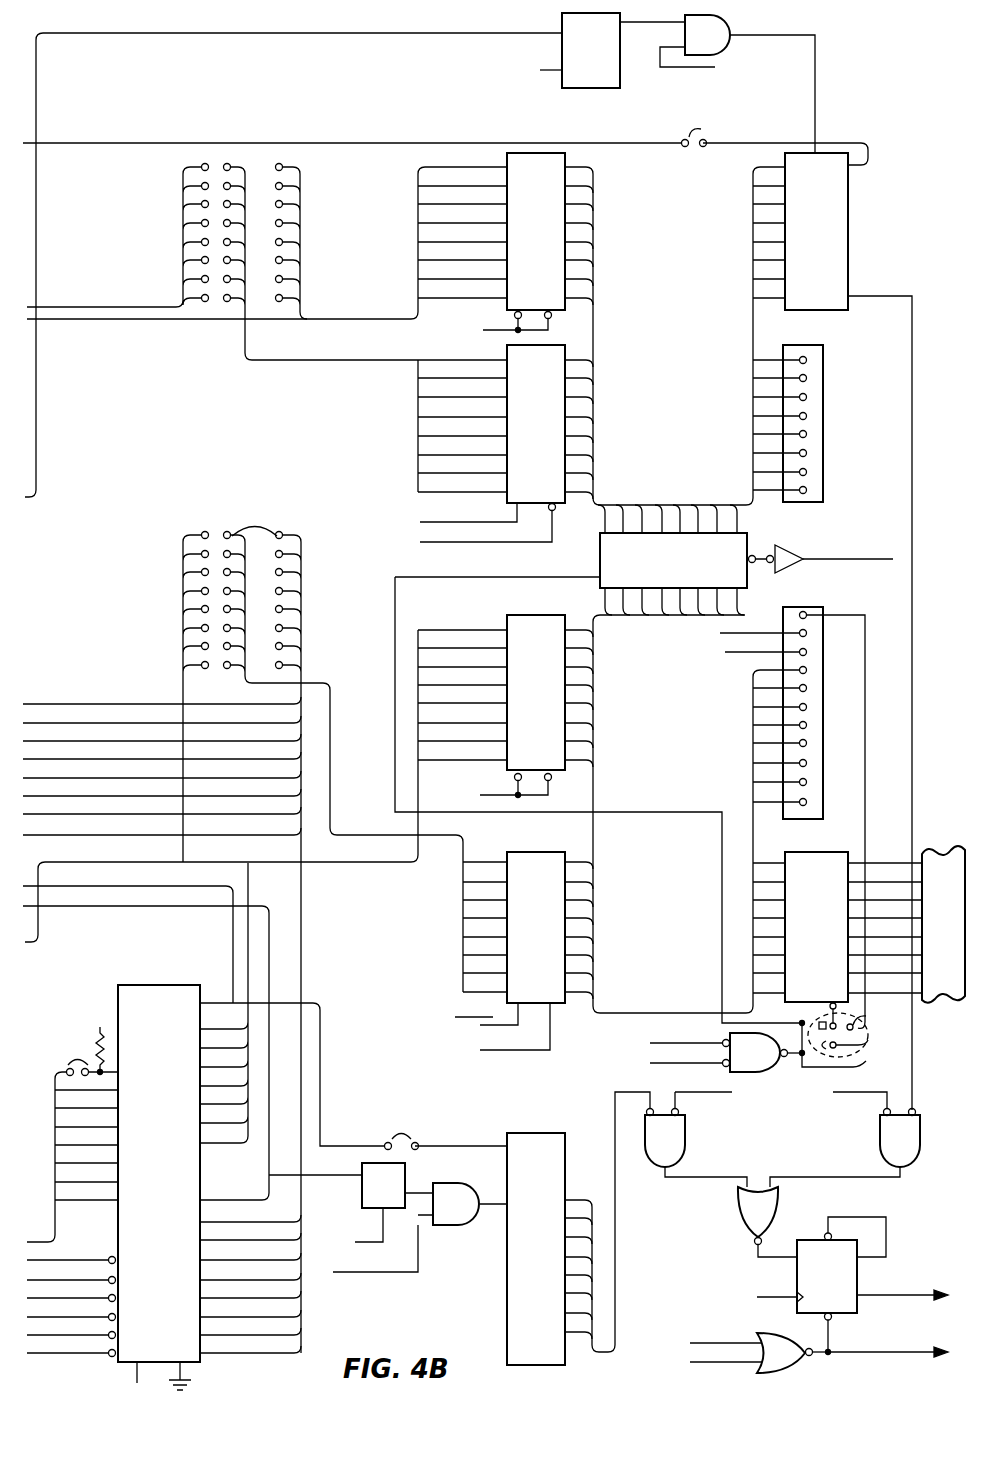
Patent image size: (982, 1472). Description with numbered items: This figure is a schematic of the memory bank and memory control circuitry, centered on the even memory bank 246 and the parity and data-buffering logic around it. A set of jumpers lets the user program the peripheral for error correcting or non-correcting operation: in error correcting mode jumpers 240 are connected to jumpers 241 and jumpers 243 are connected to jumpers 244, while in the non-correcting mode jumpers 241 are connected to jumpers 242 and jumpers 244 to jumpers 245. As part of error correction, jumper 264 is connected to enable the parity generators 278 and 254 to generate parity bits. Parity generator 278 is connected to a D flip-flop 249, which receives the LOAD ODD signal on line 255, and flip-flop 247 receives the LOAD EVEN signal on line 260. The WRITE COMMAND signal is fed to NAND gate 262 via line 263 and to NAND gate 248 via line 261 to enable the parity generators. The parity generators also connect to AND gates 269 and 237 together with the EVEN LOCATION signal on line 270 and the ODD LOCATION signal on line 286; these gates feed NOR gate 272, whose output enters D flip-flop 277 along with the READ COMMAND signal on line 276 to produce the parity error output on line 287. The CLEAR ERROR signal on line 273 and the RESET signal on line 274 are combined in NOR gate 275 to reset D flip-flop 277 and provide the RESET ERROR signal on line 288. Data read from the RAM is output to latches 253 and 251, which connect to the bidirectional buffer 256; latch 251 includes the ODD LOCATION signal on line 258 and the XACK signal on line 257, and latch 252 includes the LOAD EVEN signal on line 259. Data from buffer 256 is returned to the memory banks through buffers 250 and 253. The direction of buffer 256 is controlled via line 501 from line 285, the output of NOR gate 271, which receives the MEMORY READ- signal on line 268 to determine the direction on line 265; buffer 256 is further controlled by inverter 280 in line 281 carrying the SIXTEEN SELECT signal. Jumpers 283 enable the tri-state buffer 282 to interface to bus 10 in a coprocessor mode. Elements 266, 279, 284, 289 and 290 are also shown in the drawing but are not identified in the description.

The bus 10 is at (949, 845).
The AND gate 237 is at (845, 1148).
The jumpers 240 is at (207, 163).
The jumpers 241 is at (231, 164).
The jumpers 242 is at (283, 166).
The jumpers 243 is at (206, 532).
The jumpers 244 is at (229, 532).
The jumpers 245 is at (282, 532).
The even memory bank 246 is at (162, 1126).
The flip-flop 247 is at (351, 1185).
The NAND gate 248 is at (462, 1204).
The D flip-flop 249 is at (322, 255).
The buffer 250 is at (406, 329).
The latch 251 is at (505, 424).
The latch 252 is at (309, 778).
The latch 253 is at (500, 955).
The parity generator 254 is at (553, 1249).
The line 255 is at (542, 71).
The bidirectional buffer 256 is at (571, 563).
The line 257 is at (472, 520).
The line 258 is at (493, 545).
The line 259 is at (487, 796).
The line 260 is at (370, 1243).
The line 261 is at (373, 1272).
The NAND gate 262 is at (717, 84).
The line 263 is at (718, 66).
The jumper 264 is at (689, 136).
The line 265 is at (732, 635).
The signal line 266 is at (732, 654).
The line 268 is at (666, 1063).
The AND gate 269 is at (673, 1222).
The line 270 is at (721, 1091).
The NOR gate 271 is at (763, 1052).
The NOR gate 272 is at (767, 1222).
The line 273 is at (714, 1344).
The line 274 is at (714, 1362).
The NOR gate 275 is at (792, 1353).
The line 276 is at (778, 1289).
The D flip-flop 277 is at (841, 1284).
The parity generator 278 is at (807, 626).
The terminal strip 279 is at (825, 447).
The inverter 280 is at (818, 546).
The line 281 is at (858, 559).
The tri-state buffer 282 is at (757, 817).
The jumpers 283 is at (862, 1016).
The switch 284 is at (856, 1035).
The line 285 is at (879, 1066).
The line 286 is at (840, 1099).
The line 287 is at (903, 1284).
The line 288 is at (888, 1342).
The switch 289 is at (68, 1062).
The resistor 290 is at (103, 1031).
The line 501 is at (679, 813).